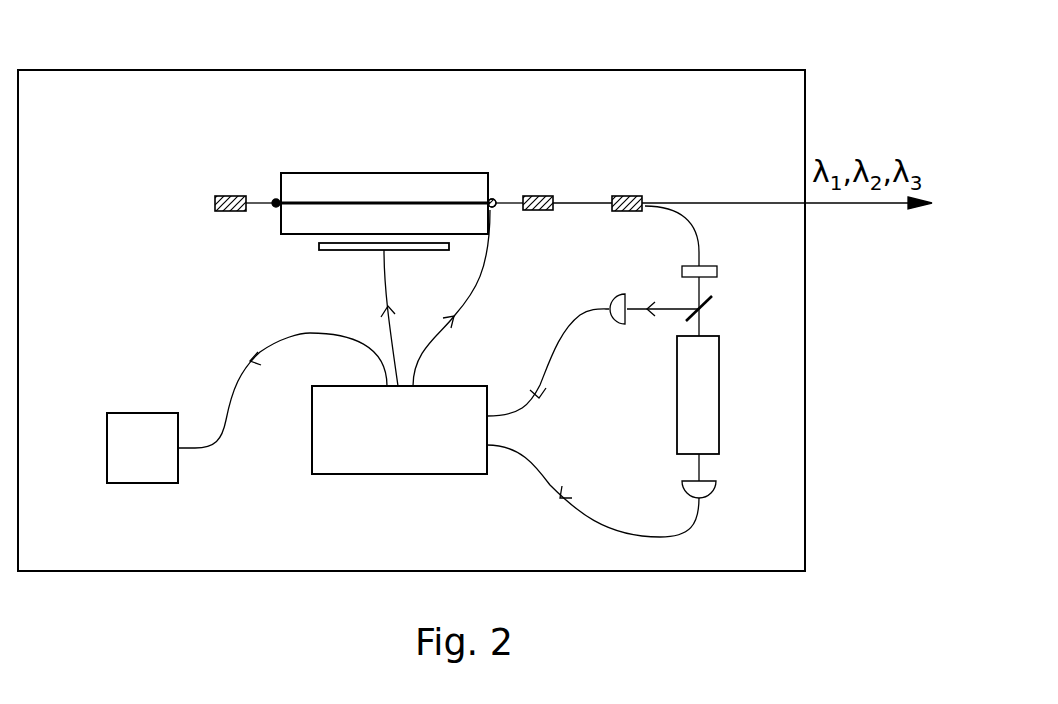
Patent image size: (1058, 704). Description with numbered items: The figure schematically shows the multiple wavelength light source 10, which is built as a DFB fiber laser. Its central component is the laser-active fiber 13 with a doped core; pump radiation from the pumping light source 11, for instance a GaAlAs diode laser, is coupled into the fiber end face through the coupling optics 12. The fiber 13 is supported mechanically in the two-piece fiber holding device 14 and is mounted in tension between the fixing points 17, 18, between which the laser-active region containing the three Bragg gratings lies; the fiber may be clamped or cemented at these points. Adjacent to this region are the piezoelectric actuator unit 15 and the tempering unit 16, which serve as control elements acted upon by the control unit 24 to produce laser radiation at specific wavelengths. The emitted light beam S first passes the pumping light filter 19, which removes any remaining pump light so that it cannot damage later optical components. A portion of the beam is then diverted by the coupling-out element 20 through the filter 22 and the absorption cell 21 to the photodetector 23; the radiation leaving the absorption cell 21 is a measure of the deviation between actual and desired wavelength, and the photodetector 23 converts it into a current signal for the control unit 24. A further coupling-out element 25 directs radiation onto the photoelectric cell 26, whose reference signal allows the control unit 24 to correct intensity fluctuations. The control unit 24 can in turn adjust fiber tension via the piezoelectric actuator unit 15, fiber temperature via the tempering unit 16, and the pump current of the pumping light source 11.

The multiple wavelength light source 10 is at (73, 88).
The pumping light source 11 is at (131, 418).
The coupling optics 12 is at (222, 196).
The laser-active fiber 13 is at (320, 201).
The fiber holding device 14 is at (426, 221).
The piezoelectric actuator unit 15 is at (493, 196).
The tempering unit 16 is at (330, 251).
The fixing point 17 is at (272, 194).
The fixing point 18 is at (495, 210).
The pumping light filter 19 is at (538, 196).
The coupling-out element 20 is at (625, 196).
The absorption cell 21 is at (712, 395).
The filter 22 is at (718, 272).
The photodetector 23 is at (717, 488).
The control unit 24 is at (348, 463).
The coupling-out element 25 is at (714, 300).
The photoelectric cell 26 is at (618, 325).
The light beam S is at (863, 204).